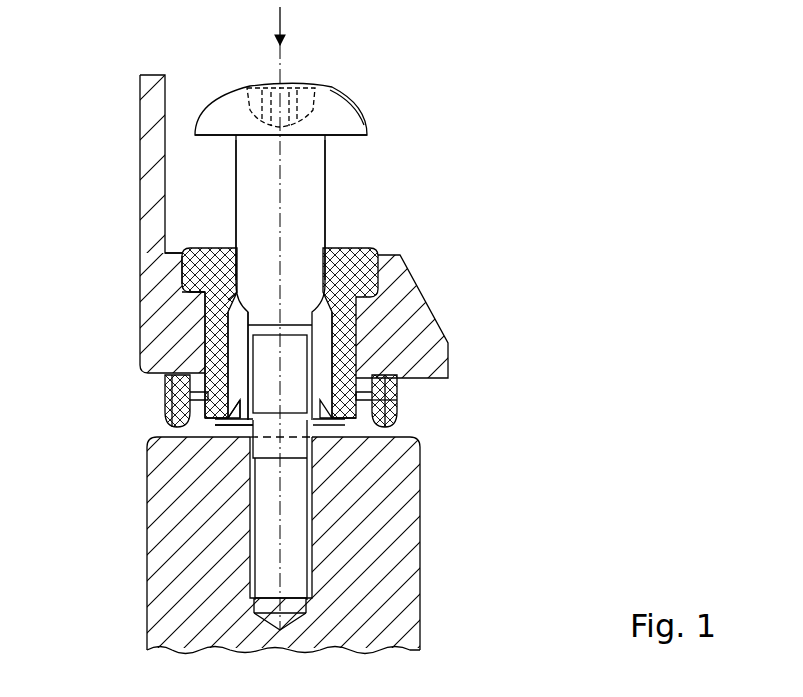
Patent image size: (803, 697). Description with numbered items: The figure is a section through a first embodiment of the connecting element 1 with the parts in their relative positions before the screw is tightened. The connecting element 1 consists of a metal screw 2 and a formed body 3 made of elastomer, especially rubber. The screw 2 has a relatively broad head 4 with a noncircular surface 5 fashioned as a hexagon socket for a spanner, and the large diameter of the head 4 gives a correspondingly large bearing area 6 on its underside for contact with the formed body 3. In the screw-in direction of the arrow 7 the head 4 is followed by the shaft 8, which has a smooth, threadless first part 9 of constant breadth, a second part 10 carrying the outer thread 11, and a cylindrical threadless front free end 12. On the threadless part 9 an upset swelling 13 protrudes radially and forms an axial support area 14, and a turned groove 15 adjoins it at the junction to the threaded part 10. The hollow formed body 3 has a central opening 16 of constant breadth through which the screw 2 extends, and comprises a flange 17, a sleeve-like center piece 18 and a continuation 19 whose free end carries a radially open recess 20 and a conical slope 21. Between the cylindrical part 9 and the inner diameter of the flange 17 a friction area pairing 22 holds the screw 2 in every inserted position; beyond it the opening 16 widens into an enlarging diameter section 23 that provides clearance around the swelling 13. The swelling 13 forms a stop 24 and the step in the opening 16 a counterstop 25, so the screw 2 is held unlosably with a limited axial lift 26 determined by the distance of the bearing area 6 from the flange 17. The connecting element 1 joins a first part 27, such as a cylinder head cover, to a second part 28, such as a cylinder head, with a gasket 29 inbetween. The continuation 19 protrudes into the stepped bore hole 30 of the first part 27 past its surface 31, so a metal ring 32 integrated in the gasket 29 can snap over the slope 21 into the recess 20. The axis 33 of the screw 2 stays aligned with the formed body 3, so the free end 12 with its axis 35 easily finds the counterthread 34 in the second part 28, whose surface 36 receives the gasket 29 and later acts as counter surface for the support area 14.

The connecting element 1 is at (442, 100).
The screw 2 is at (330, 182).
The formed body 3 is at (374, 248).
The head 4 is at (342, 108).
The noncircular surface 5 is at (315, 100).
The bearing area 6 is at (366, 147).
The arrow 7 is at (282, 22).
The shaft 8 is at (307, 173).
The first part 9 is at (302, 267).
The second part 10 is at (398, 378).
The outer thread 11 is at (418, 380).
The front free end 12 is at (293, 448).
The upset swelling 13 is at (332, 305).
The support area 14 is at (293, 357).
The turned groove 15 is at (268, 323).
The internal opening 16 is at (215, 360).
The flange 17 is at (203, 246).
The sleeve-like center piece 18 is at (233, 340).
The continuation 19 is at (170, 390).
The recess 20 is at (172, 404).
The conical slope 21 is at (223, 430).
The friction area pairing 22 is at (192, 268).
The enlarging diameter section 23 is at (235, 430).
The stop 24 is at (232, 300).
The counterstop 25 is at (208, 292).
The lift 26 is at (211, 138).
The first part 27 is at (152, 112).
The second part 28 is at (165, 613).
The gasket 29 is at (192, 415).
The stepped bore hole 30 is at (352, 333).
The surface 31 is at (400, 400).
The metal ring 32 is at (368, 432).
The axis 33 is at (282, 200).
The counterthread 34 is at (312, 553).
The axis 35 is at (282, 578).
The surface 36 is at (232, 440).